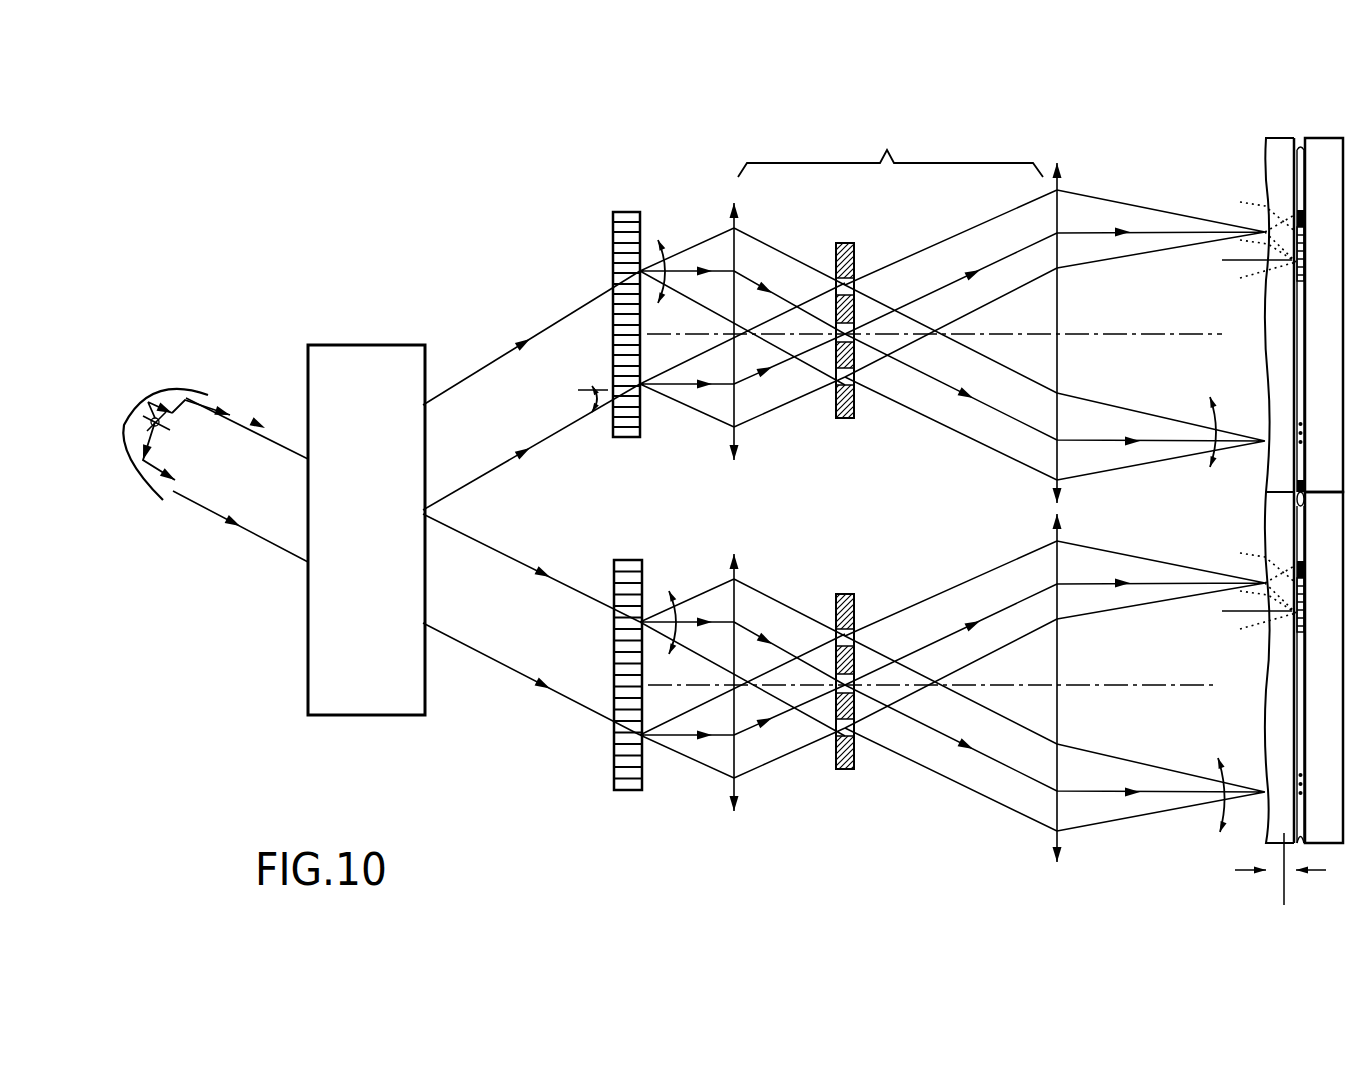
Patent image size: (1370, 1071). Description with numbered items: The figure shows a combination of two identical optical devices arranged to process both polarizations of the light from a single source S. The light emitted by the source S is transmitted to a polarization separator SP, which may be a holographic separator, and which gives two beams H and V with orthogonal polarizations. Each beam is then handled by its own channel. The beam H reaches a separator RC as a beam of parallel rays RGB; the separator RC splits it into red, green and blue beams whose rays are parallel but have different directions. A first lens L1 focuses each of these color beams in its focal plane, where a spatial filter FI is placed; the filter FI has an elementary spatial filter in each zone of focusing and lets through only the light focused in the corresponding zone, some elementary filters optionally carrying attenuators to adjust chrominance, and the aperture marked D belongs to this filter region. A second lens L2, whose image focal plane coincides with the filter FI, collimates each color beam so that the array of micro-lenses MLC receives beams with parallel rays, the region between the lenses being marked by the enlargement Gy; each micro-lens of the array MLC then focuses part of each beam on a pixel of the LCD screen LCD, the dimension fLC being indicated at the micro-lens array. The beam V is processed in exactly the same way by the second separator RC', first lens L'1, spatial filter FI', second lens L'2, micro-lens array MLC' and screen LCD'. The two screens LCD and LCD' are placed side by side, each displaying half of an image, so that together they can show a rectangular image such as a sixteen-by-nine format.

The source S is at (172, 392).
The polarization separator SP is at (346, 375).
The beam H is at (483, 390).
The beam of parallel rays RGB is at (531, 439).
The beam V is at (473, 635).
The separator RC is at (607, 295).
The separator RC' is at (607, 652).
The first lens L1 is at (735, 205).
The first lens L'1 is at (719, 655).
The spatial filter FI is at (853, 304).
The spatial filter FI' is at (856, 655).
The diaphragm D is at (829, 497).
The second lens L2 is at (1060, 165).
The second lens L'2 is at (1021, 706).
The enlargement Gy is at (890, 152).
The array of micro-lenses MLC is at (1253, 462).
The array of micro-lenses MLC' is at (1247, 707).
The LCD screen LCD is at (1320, 293).
The LCD screen LCD' is at (1333, 707).
The microlens focal length fLC is at (1247, 869).